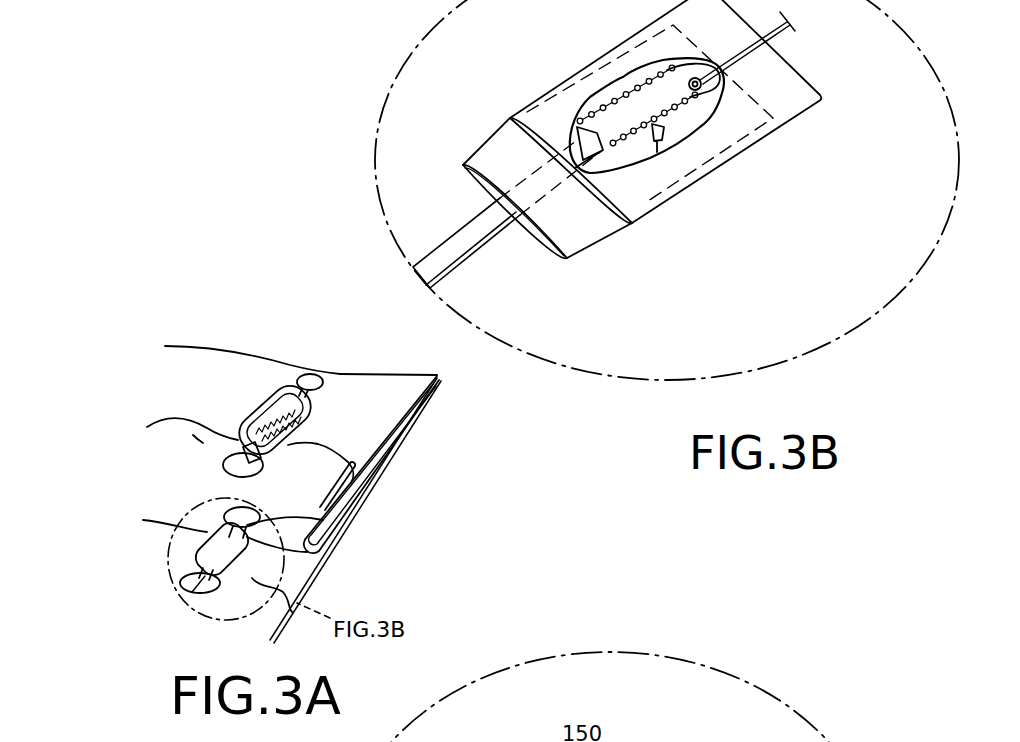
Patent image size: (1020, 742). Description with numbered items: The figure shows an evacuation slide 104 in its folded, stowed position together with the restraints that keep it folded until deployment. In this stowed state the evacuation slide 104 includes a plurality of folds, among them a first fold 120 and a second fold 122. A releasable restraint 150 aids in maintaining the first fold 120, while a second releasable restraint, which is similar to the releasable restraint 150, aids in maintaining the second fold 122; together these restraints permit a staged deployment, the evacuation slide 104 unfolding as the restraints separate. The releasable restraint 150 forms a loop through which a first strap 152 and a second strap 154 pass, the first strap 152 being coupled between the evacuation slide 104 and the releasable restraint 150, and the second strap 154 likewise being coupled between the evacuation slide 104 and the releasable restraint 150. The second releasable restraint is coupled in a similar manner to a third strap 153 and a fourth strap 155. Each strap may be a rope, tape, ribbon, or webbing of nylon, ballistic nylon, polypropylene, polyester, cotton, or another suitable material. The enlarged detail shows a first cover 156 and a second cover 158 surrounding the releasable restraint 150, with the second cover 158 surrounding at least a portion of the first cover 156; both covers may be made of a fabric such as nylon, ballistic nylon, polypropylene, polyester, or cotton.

In FIG. 3A, the evacuation slide 104 is at (190, 353).
In FIG. 3A, the first fold 120 is at (437, 375).
In FIG. 3A, the second fold 122 is at (327, 557).
In FIG. 3A, the releasable restraint 150 is at (251, 431).
In FIG. 3B, the releasable restraint 150 is at (618, 72).
In FIG. 3A, the first strap 152 is at (185, 578).
In FIG. 3B, the first strap 152 is at (457, 243).
In FIG. 3A, the third strap 153 is at (227, 461).
In FIG. 3A, the second strap 154 is at (333, 527).
In FIG. 3B, the second strap 154 is at (792, 27).
In FIG. 3A, the fourth strap 155 is at (301, 370).
In FIG. 3A, the first cover 156 is at (151, 550).
In FIG. 3B, the first cover 156 is at (493, 142).
In FIG. 3A, the second cover 158 is at (207, 543).
In FIG. 3B, the second cover 158 is at (797, 103).